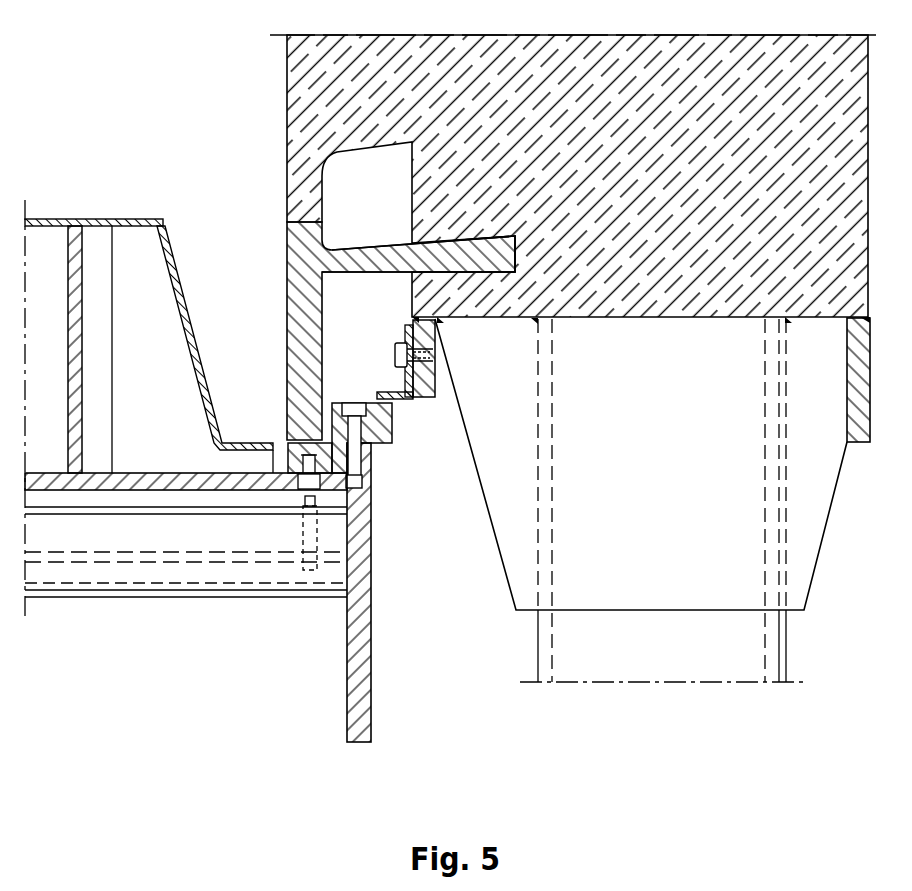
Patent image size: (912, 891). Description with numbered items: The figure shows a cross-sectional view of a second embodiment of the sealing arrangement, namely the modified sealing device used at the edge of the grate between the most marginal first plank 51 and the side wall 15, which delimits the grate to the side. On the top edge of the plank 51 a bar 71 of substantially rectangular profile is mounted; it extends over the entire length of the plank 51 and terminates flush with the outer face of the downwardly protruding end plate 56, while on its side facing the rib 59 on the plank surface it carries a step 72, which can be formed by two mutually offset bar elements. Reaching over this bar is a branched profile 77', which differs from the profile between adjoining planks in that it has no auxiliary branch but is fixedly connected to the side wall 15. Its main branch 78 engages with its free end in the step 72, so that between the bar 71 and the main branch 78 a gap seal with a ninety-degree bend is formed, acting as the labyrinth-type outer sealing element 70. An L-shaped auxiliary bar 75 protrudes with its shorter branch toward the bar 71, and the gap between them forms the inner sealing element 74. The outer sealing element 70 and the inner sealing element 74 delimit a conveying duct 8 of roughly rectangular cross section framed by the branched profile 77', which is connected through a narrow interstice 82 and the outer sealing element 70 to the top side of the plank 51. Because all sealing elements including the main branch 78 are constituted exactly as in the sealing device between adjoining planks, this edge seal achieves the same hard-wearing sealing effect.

The conveying duct 8 is at (385, 307).
The side wall 15 is at (820, 648).
The first plank 51 is at (143, 602).
The end plate 56 is at (362, 692).
The rib 59 is at (42, 219).
The outer sealing element 70 is at (282, 438).
The bar 71 is at (327, 453).
The step 72 is at (340, 492).
The inner sealing element 74 is at (394, 408).
The auxiliary bar 75 is at (412, 400).
The branched profile 77' is at (377, 237).
The main branch 78 is at (290, 332).
The narrow interstice 82 is at (328, 412).